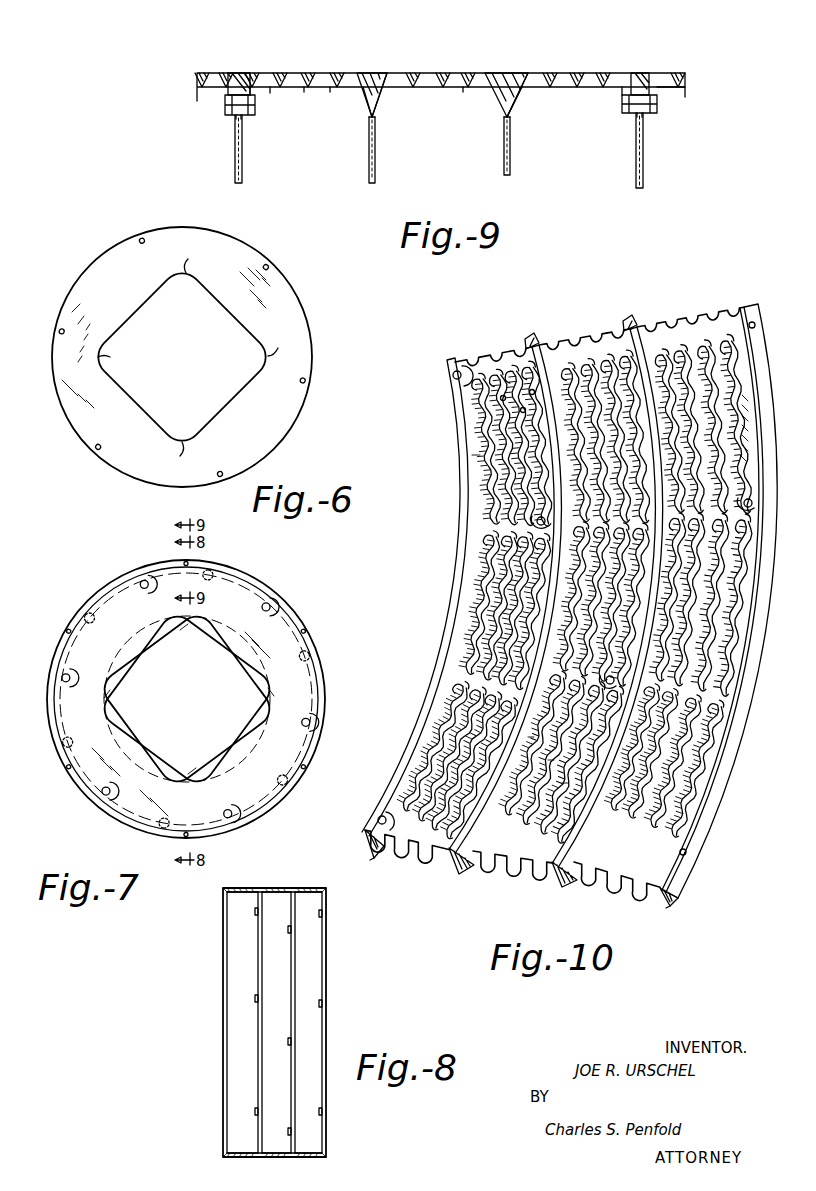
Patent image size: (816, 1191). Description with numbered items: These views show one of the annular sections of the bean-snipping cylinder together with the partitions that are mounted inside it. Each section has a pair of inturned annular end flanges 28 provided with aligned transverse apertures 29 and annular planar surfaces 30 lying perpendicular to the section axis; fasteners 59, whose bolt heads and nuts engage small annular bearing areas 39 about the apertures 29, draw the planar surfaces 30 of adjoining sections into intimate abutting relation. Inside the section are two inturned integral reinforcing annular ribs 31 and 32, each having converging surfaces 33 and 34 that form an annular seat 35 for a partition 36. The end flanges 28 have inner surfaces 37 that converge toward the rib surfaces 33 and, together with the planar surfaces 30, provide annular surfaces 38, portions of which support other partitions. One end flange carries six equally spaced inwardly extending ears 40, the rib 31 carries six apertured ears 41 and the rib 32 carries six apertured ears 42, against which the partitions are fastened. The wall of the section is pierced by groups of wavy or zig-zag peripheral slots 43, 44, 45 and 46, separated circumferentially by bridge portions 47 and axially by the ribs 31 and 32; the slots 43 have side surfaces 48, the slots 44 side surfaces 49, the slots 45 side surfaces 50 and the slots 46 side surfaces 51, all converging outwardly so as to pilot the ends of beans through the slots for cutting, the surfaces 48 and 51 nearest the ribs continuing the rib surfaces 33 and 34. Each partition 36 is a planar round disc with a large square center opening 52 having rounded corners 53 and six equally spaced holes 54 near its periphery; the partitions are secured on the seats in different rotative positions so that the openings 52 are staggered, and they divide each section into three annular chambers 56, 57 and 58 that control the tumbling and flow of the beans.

In FIG. 9, the inturned annular end flange 28 is at (646, 118).
In FIG. 10, the inturned annular end flange 28 is at (680, 902).
In FIG. 9, the transverse aperture 29 is at (642, 72).
In FIG. 10, the transverse aperture 29 is at (686, 852).
In FIG. 10, the annular planar surface 30 is at (360, 838).
In FIG. 9, the reinforcing annular rib 31 is at (370, 73).
In FIG. 10, the reinforcing annular rib 31 is at (456, 870).
In FIG. 9, the reinforcing annular rib 32 is at (514, 73).
In FIG. 10, the reinforcing annular rib 32 is at (566, 885).
In FIG. 9, the converging surface 33 is at (518, 104).
In FIG. 10, the converging surface 33 is at (642, 320).
In FIG. 9, the converging surface 34 is at (488, 104).
In FIG. 9, the annular seat 35 is at (500, 118).
In FIG. 10, the annular seat 35 is at (620, 322).
In FIG. 9, the partition 36 is at (643, 178).
In FIG. 6, the partition 36 is at (301, 317).
In FIG. 8, the partition 36 is at (320, 1022).
In FIG. 9, the inner surface 37 is at (620, 96).
In FIG. 10, the inner surface 37 is at (668, 897).
In FIG. 10, the annular surface 38 is at (416, 716).
In FIG. 9, the annular bearing area 39 is at (662, 93).
In FIG. 10, the annular bearing area 39 is at (382, 810).
In FIG. 8, the ear 40 is at (320, 1108).
In FIG. 10, the ear 40 is at (752, 504).
In FIG. 7, the apertured ear 41 is at (232, 814).
In FIG. 8, the apertured ear 41 is at (254, 1110).
In FIG. 10, the apertured ear 41 is at (544, 517).
In FIG. 7, the apertured ear 42 is at (122, 818).
In FIG. 8, the apertured ear 42 is at (288, 1130).
In FIG. 10, the apertured ear 42 is at (616, 676).
In FIG. 9, the slot 43 is at (681, 74).
In FIG. 10, the slot 43 is at (503, 398).
In FIG. 9, the slot 44 is at (443, 72).
In FIG. 10, the slot 44 is at (523, 410).
In FIG. 9, the slot 45 is at (467, 72).
In FIG. 10, the slot 45 is at (532, 392).
In FIG. 9, the slot 46 is at (490, 72).
In FIG. 10, the slot 46 is at (752, 750).
In FIG. 10, the bridge portion 47 is at (730, 688).
In FIG. 9, the side surface 48 is at (534, 88).
In FIG. 10, the side surface 48 is at (536, 737).
In FIG. 9, the side surface 49 is at (272, 89).
In FIG. 10, the side surface 49 is at (548, 760).
In FIG. 9, the side surface 50 is at (304, 90).
In FIG. 10, the side surface 50 is at (562, 783).
In FIG. 9, the side surface 51 is at (462, 90).
In FIG. 6, the center non-circular opening 52 is at (230, 310).
In FIG. 7, the center non-circular opening 52 is at (250, 706).
In FIG. 6, the rounded corner 53 is at (198, 356).
In FIG. 7, the rounded corner 53 is at (260, 691).
In FIG. 6, the hole 54 is at (218, 474).
In FIG. 8, the annular chamber 56 is at (318, 890).
In FIG. 8, the annular chamber 57 is at (284, 889).
In FIG. 8, the annular chamber 58 is at (250, 890).
In FIG. 9, the fastener 59 is at (657, 108).